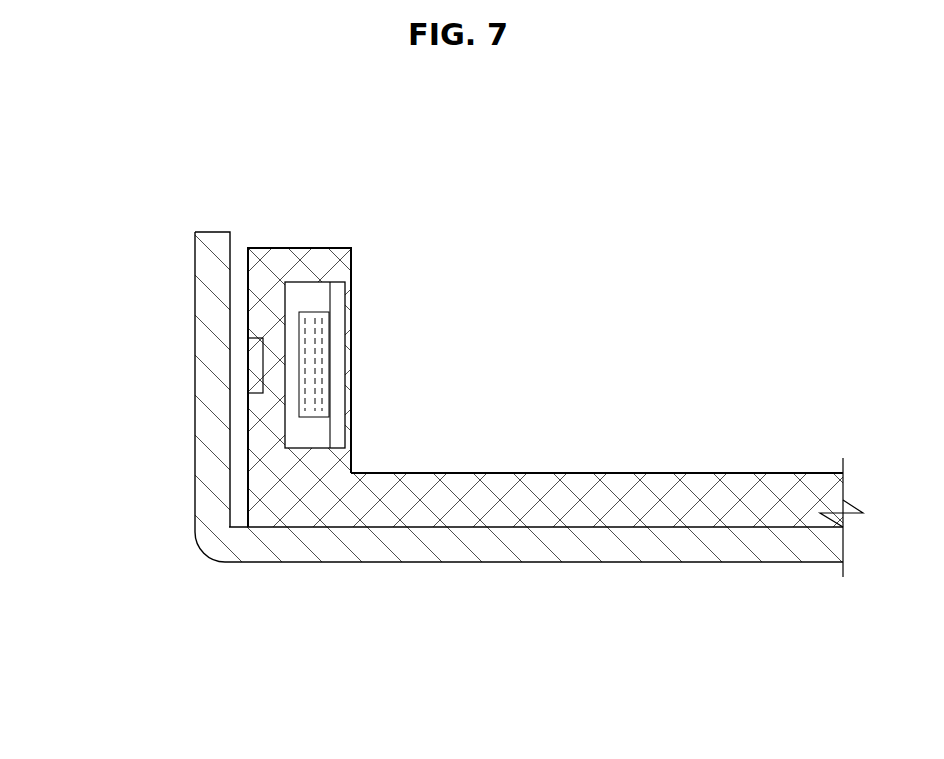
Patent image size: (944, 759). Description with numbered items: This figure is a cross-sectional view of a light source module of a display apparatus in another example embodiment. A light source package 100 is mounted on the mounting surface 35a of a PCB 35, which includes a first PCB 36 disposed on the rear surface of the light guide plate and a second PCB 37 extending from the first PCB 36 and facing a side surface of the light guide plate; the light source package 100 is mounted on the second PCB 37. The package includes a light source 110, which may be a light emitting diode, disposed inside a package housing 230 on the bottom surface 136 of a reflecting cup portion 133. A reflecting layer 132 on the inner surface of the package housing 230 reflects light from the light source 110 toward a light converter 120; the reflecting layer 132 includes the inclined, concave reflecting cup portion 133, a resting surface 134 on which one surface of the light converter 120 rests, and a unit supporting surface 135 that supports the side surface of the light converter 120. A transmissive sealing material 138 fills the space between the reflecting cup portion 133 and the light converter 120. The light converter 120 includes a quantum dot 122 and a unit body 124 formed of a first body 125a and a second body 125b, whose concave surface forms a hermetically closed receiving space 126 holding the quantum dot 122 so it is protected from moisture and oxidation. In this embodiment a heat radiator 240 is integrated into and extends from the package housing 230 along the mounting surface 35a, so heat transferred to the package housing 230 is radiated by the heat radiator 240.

The PCB 35 is at (487, 460).
The mounting surface 35a is at (233, 287).
The first PCB 36 is at (279, 562).
The second PCB 37 is at (198, 511).
The light source package 100 is at (370, 207).
The light source 110 is at (260, 338).
The light converter 120 is at (366, 291).
The quantum dot 122 is at (305, 382).
The unit body 124 is at (410, 359).
The first body 125a is at (338, 354).
The second body 125b is at (322, 304).
The receiving space 126 is at (322, 382).
The reflecting layer 132 is at (184, 456).
The reflecting cup portion 133 is at (272, 416).
The resting surface 134 is at (291, 432).
The unit supporting surface 135 is at (316, 448).
The bottom surface 136 is at (250, 338).
The transmissive sealing material 138 is at (280, 322).
The package housing 230 is at (335, 249).
The heat radiator 240 is at (523, 507).